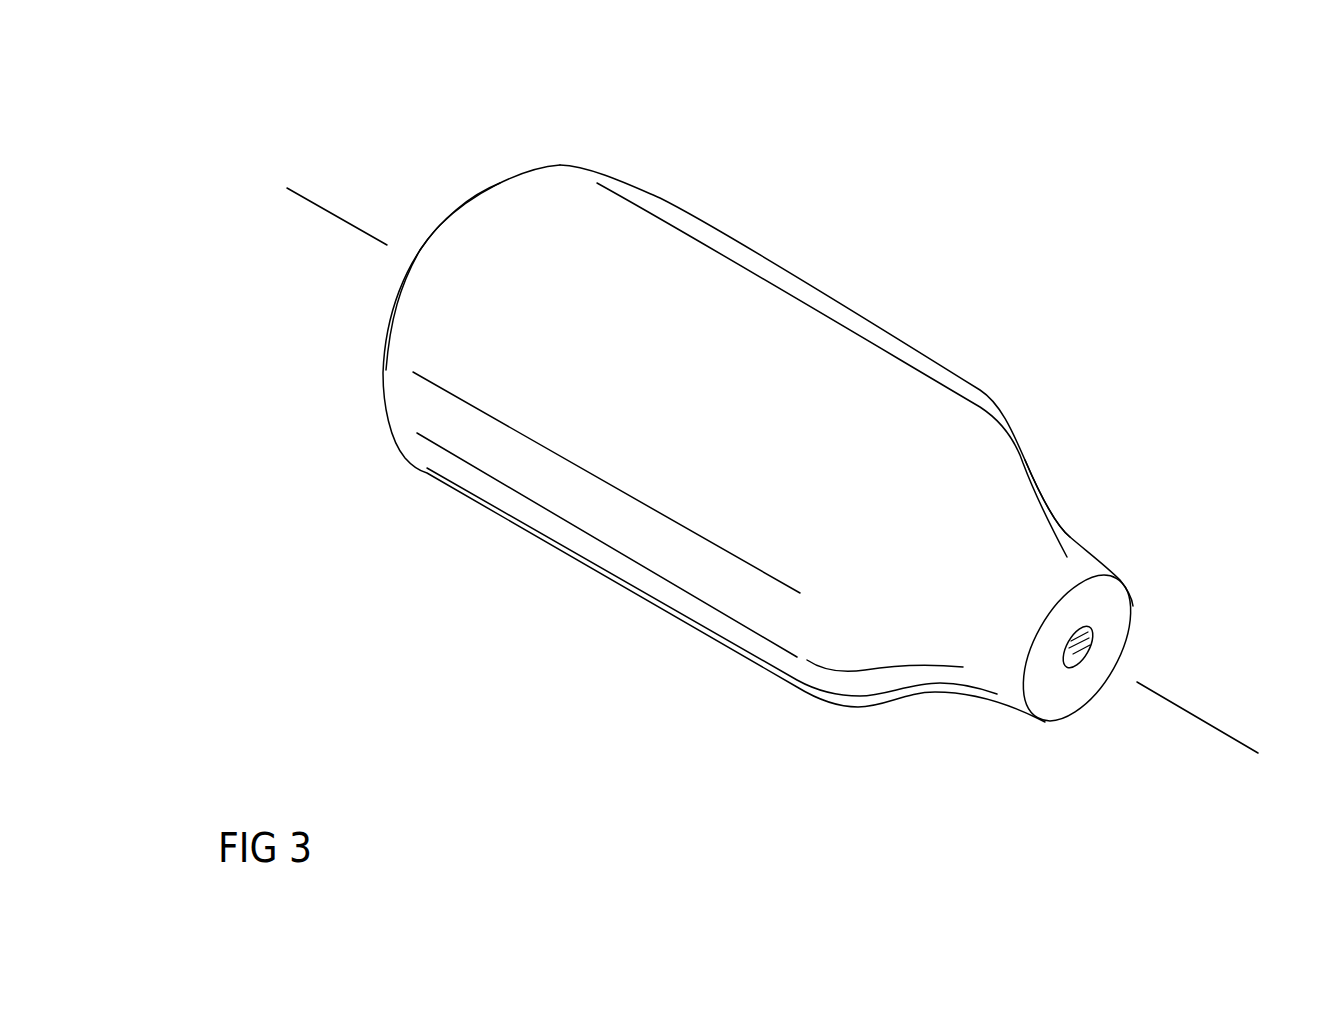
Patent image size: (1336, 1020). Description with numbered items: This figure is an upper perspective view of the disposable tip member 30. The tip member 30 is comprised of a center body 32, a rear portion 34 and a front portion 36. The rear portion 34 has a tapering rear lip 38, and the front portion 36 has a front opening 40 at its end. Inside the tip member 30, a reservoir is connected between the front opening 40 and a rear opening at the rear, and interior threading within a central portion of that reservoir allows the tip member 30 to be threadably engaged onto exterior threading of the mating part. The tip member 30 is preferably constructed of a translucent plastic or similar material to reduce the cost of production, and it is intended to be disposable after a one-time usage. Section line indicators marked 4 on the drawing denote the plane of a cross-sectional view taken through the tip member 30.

The tip member 30 is at (837, 271).
The center body 32 is at (615, 530).
The rear portion 34 is at (413, 402).
The front portion 36 is at (1073, 540).
The tapering rear lip 38 is at (482, 187).
The front opening 40 is at (1090, 647).
The section line 4- 4 is at (316, 230).